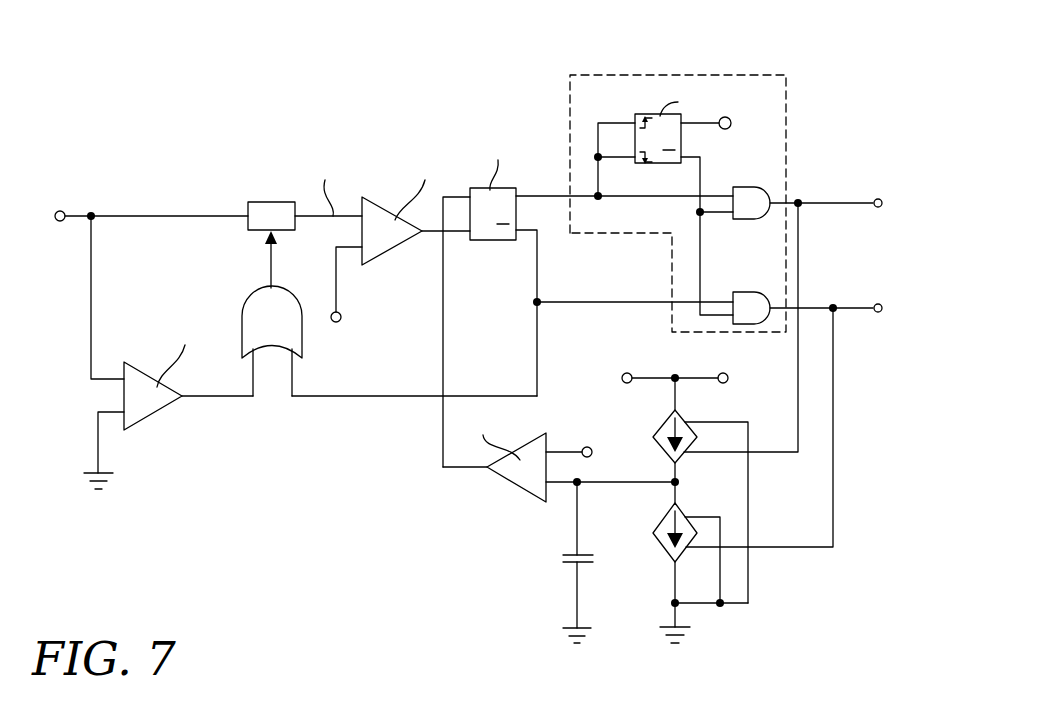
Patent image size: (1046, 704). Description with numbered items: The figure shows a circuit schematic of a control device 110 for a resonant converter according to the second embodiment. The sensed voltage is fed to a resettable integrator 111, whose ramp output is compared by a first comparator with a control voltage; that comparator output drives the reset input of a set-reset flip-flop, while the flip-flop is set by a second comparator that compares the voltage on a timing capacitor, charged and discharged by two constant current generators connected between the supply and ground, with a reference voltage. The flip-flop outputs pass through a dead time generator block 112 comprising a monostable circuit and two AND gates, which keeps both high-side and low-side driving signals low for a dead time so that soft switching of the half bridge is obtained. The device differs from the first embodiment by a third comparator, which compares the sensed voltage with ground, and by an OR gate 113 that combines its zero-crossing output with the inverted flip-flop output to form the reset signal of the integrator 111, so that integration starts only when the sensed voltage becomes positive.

The control device 110 is at (277, 170).
The resettable integrator 111 is at (262, 212).
The dead time generator block 112 is at (753, 75).
The OR gate 113 is at (270, 347).